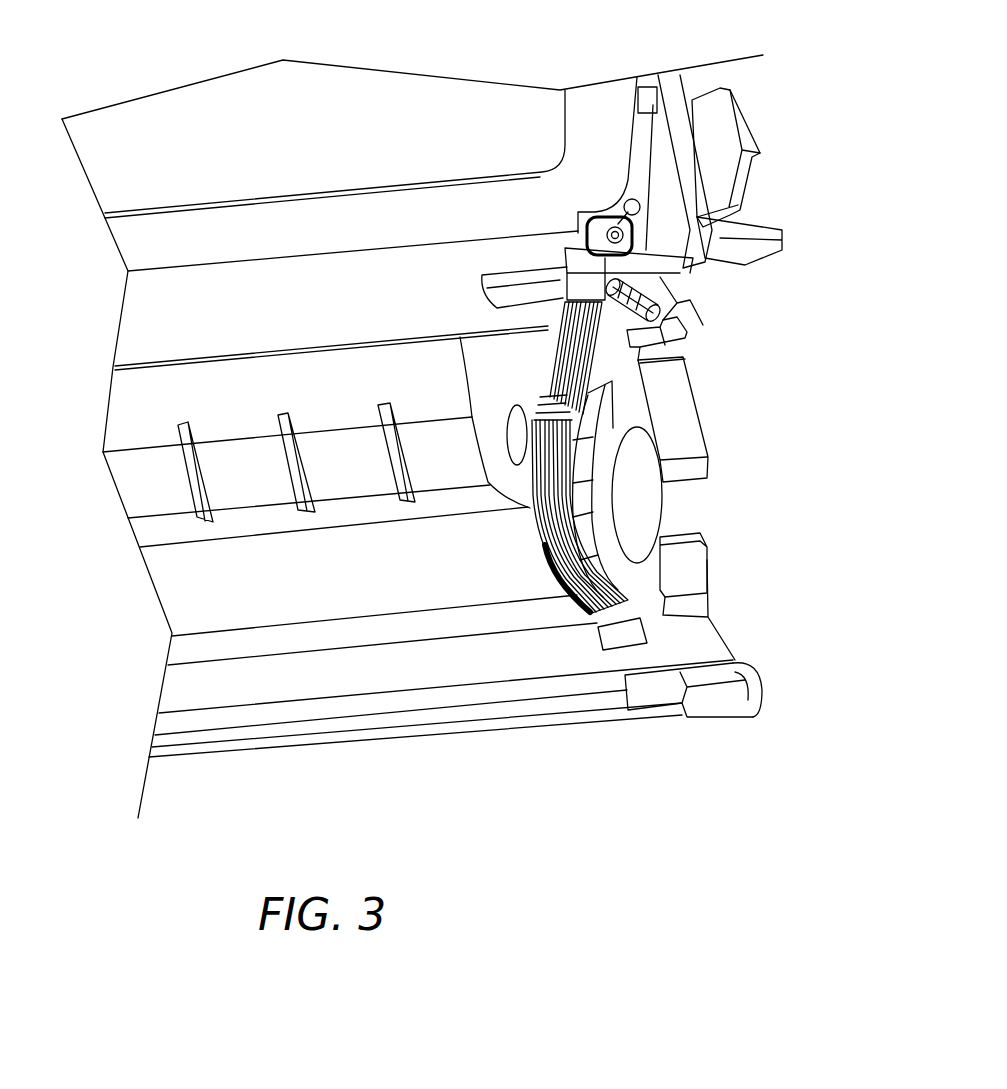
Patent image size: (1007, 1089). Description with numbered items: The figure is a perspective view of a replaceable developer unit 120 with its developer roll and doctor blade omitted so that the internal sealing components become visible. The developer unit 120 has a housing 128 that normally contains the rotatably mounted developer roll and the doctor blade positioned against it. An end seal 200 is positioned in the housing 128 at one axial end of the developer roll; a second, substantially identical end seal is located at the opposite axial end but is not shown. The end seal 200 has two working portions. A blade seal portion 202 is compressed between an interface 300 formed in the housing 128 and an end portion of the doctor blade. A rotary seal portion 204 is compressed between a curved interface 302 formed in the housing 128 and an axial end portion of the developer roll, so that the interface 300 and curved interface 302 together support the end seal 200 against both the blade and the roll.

The developer unit 120 is at (772, 105).
The housing 128 is at (702, 422).
The end seal 200 is at (575, 487).
The blade seal portion 202 is at (587, 349).
The rotary seal portion 204 is at (610, 595).
The interface 300 is at (549, 372).
The curved interface 302 is at (540, 553).